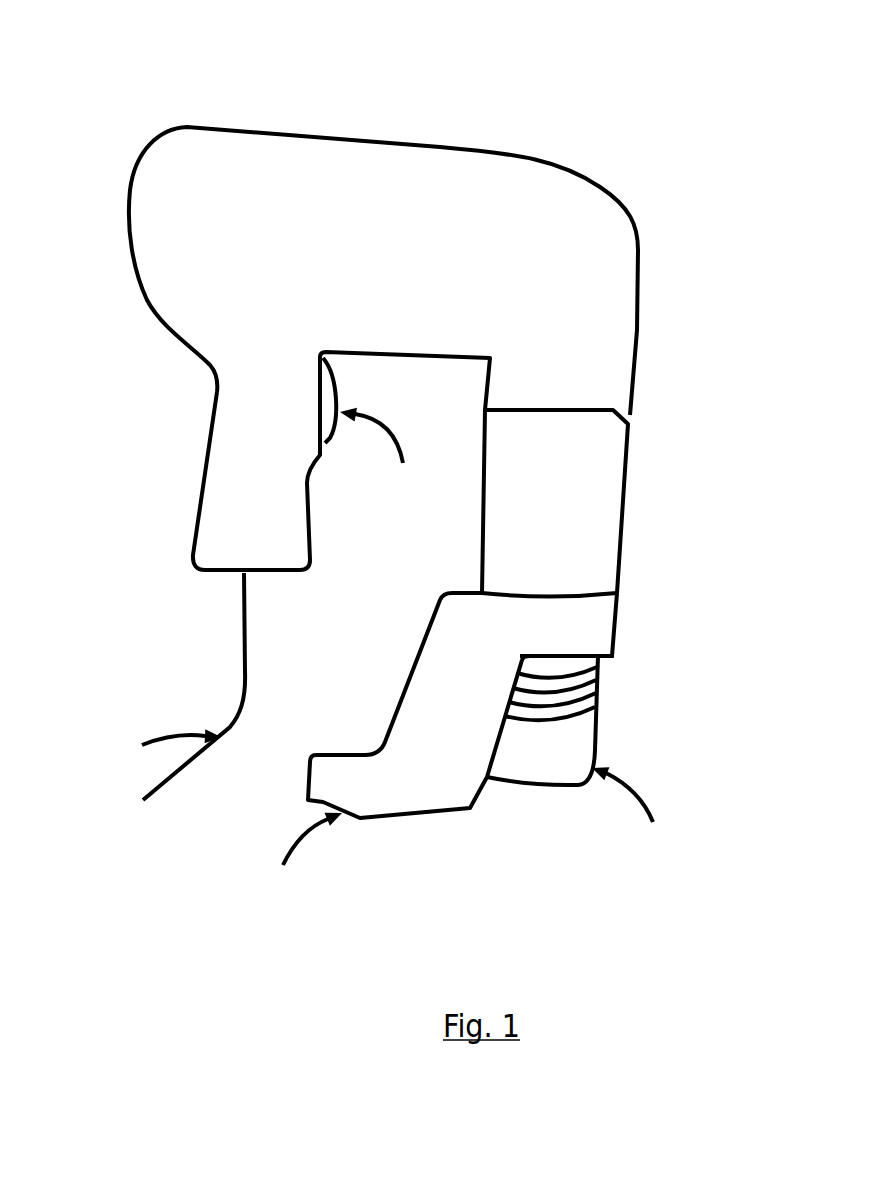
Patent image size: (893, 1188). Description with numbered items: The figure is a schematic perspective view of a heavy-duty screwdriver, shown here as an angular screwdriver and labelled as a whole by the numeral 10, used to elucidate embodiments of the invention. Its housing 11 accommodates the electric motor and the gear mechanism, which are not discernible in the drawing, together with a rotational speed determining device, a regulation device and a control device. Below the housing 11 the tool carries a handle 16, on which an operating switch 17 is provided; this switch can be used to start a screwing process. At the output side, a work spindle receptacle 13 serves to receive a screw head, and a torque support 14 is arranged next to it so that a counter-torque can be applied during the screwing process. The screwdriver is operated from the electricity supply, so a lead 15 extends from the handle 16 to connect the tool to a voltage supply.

The hand-held power tool 10 is at (607, 925).
The housing 11 is at (443, 148).
The output-side work spindle receptacle 13 is at (593, 750).
The torque support 14 is at (327, 803).
The lead 15 is at (243, 675).
The handle 16 is at (200, 497).
The operating switch 17 is at (333, 440).